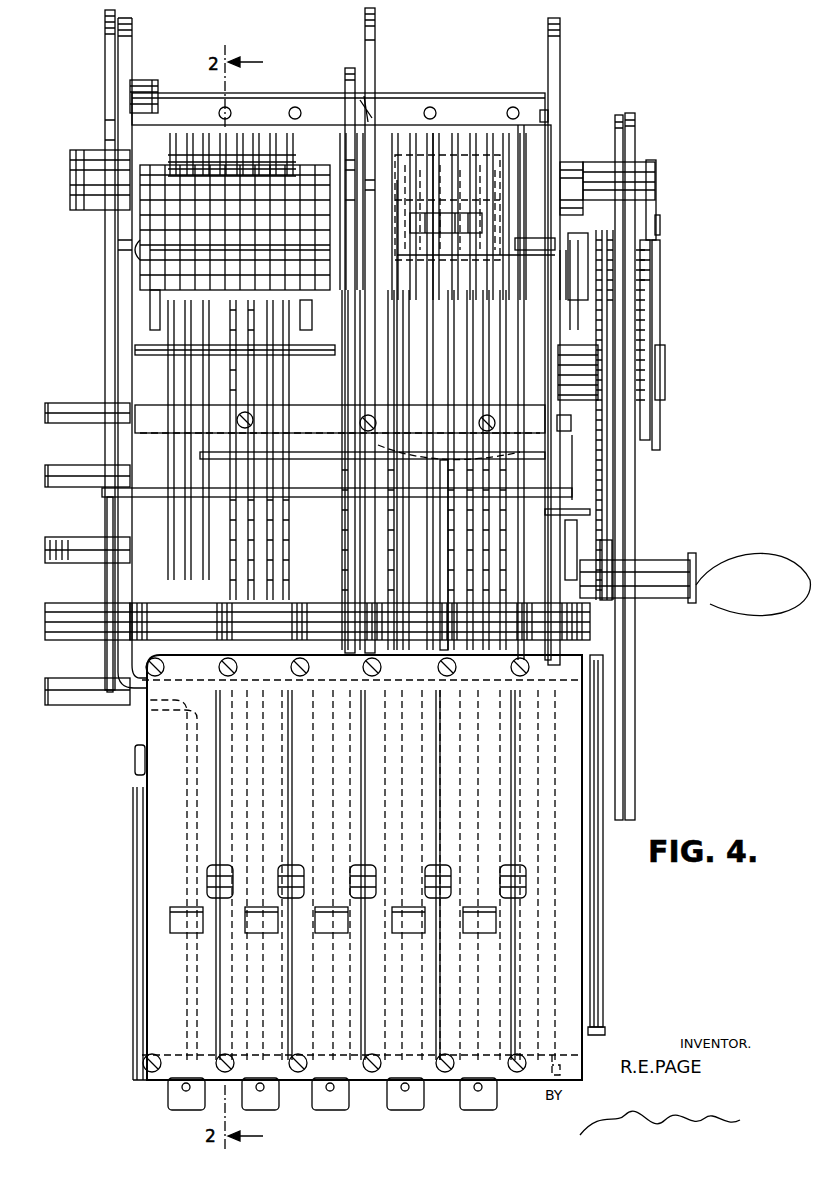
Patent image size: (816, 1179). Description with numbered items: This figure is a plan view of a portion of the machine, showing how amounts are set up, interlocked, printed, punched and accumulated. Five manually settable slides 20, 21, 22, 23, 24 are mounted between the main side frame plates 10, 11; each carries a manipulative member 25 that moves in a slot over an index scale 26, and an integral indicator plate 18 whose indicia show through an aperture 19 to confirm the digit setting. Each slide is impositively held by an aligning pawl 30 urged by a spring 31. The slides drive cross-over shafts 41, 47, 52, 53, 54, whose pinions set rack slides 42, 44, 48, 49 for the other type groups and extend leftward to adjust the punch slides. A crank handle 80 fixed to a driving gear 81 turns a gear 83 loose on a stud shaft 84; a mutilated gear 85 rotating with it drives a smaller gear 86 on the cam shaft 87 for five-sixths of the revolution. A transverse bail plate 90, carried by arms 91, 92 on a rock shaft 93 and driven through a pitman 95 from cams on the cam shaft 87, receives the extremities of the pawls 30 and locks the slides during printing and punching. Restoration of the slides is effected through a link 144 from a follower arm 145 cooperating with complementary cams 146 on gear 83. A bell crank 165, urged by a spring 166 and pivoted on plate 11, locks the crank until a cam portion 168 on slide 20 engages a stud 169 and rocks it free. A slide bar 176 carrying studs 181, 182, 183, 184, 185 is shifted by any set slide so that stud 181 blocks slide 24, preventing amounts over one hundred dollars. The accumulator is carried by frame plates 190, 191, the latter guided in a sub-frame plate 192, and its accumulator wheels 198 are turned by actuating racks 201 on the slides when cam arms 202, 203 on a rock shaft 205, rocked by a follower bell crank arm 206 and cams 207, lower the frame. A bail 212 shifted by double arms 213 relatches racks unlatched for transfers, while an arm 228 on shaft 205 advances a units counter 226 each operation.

The main side frame plate 10 is at (122, 292).
The main side frame plate 11 is at (555, 145).
The indicator plate 18 is at (345, 1112).
The aperture 19 is at (400, 925).
The manually settable slide 20 is at (522, 360).
The manually settable slide 21 is at (430, 348).
The manually settable slide 22 is at (362, 405).
The manually settable slide 23 is at (290, 935).
The manually settable slide 24 is at (205, 1005).
The manipulative member 25 is at (295, 870).
The index scale 26 is at (616, 926).
The aligning pawl 30 is at (340, 520).
The spring 31 is at (395, 440).
The cross-over shaft 41 is at (68, 690).
The rack slide 42 is at (335, 735).
The slide 44 is at (450, 550).
The cross-over shaft 47 is at (80, 405).
The slide 48 is at (355, 772).
The slide 49 is at (500, 775).
The cross-over shaft 52 is at (80, 472).
The cross-over shaft 53 is at (75, 612).
The cross-over shaft 54 is at (72, 545).
The crank handle 80 is at (715, 572).
The driving gear 81 is at (595, 495).
The gear 83 is at (595, 432).
The stud shaft 84 is at (666, 370).
The mutilated gear 85 is at (636, 300).
The gear 86 is at (640, 553).
The cam shaft 87 is at (608, 558).
The bail plate 90 is at (326, 492).
The arm 91 is at (116, 515).
The arm 92 is at (590, 512).
The rock shaft 93 is at (190, 625).
The pitman 95 is at (580, 522).
The link 144 is at (635, 160).
The follower arm 145 is at (614, 165).
The complementary cams 146 is at (618, 252).
The bell crank 165 is at (562, 282).
The spring 166 is at (578, 372).
The cam portion 168 is at (476, 415).
The stud 169 is at (550, 250).
The slide bar 176 is at (183, 103).
The stud 181 is at (228, 108).
The stud 182 is at (297, 107).
The stud 183 is at (372, 112).
The stud 184 is at (432, 107).
The stud 185 is at (514, 107).
The accumulator frame plate 190 is at (140, 215).
The accumulator frame plate 191 is at (330, 178).
The sub-frame plate 192 is at (350, 85).
The accumulator wheel 198 is at (175, 258).
The actuating rack 201 is at (260, 348).
The cam arm 202 is at (108, 62).
The cam arm 203 is at (365, 17).
The rock shaft 205 is at (640, 180).
The follower bell crank arm 206 is at (648, 218).
The complementary cams 207 is at (652, 274).
The bail 212 is at (340, 419).
The double arm 213 is at (150, 315).
The units counter 226 is at (480, 150).
The arm 228 is at (548, 130).